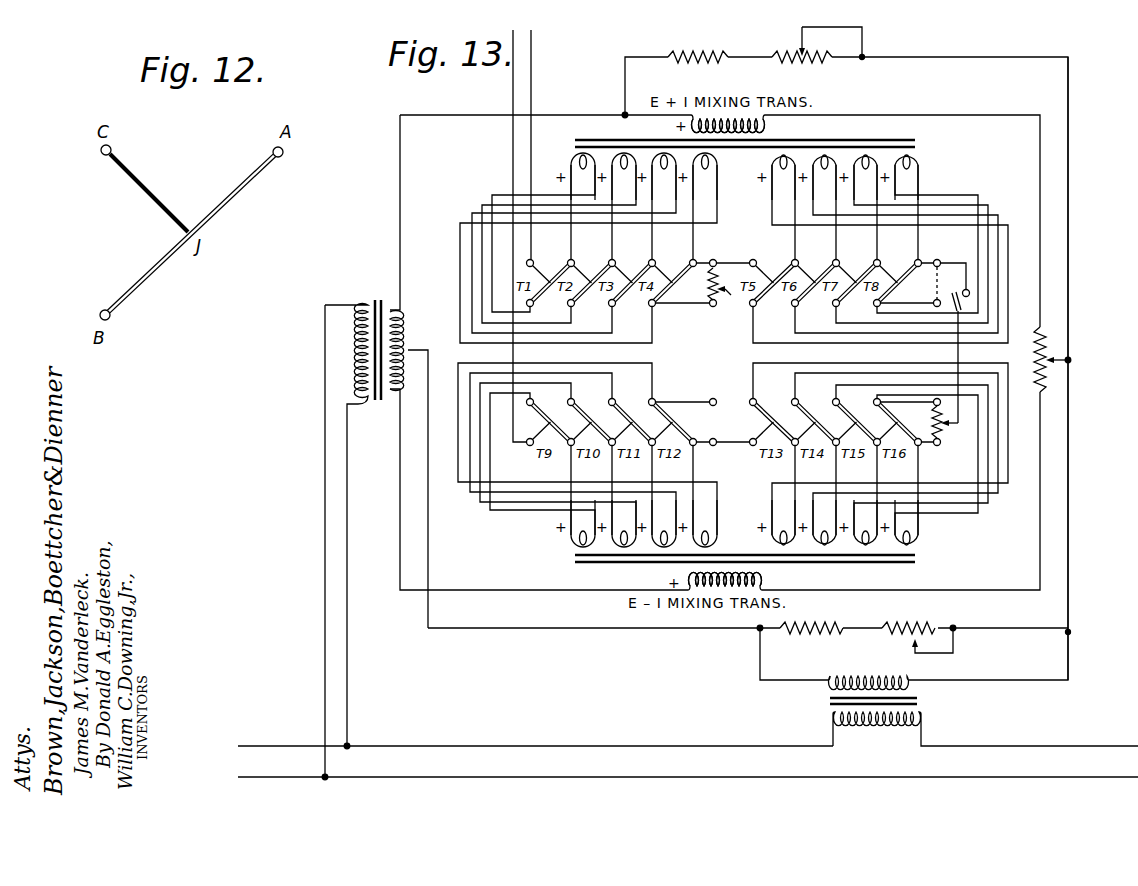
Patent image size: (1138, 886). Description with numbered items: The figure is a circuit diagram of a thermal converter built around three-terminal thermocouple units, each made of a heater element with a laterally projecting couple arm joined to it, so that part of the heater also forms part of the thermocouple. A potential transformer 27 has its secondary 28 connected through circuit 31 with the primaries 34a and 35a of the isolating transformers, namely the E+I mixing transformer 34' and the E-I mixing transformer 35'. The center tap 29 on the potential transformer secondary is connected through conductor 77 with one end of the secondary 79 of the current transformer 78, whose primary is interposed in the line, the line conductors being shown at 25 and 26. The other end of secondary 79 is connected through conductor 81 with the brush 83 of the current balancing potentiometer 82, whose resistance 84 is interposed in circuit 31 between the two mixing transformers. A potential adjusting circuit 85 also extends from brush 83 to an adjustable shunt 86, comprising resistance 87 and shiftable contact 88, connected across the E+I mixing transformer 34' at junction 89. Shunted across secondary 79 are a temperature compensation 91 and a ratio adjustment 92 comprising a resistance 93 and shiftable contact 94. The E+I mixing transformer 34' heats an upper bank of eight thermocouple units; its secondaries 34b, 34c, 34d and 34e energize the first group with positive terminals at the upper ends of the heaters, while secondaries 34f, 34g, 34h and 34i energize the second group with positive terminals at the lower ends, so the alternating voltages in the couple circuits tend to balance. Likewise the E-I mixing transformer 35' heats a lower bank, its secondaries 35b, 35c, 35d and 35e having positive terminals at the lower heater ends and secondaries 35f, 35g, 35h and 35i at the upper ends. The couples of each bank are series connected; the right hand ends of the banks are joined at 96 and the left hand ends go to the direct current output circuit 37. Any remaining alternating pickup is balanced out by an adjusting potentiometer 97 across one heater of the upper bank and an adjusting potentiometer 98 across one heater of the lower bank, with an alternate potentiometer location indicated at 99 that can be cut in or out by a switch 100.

The supply conductor 25 is at (533, 756).
The supply conductor 26 is at (688, 770).
The potential transformer 27 is at (378, 297).
The secondary 28 is at (412, 321).
The center tap 29 is at (410, 351).
The circuit 31 is at (1040, 185).
The E+I mixing transformer 34' is at (764, 129).
The primary 34a is at (742, 134).
The transformer secondary 34b is at (583, 176).
The transformer secondary 34c is at (624, 176).
The transformer secondary 34d is at (664, 176).
The transformer secondary 34e is at (705, 176).
The transformer secondary 34f is at (783, 177).
The transformer secondary 34g is at (824, 177).
The transformer secondary 34h is at (865, 177).
The transformer secondary 34i is at (906, 177).
The E-I mixing transformer 35' is at (767, 578).
The primary 35a is at (728, 571).
The secondary 35b is at (583, 523).
The secondary 35c is at (624, 523).
The secondary 35d is at (664, 523).
The secondary 35e is at (705, 523).
The secondary 35f is at (783, 522).
The secondary 35g is at (824, 522).
The secondary 35h is at (865, 522).
The secondary 35i is at (904, 524).
The D. C. output circuit 37 is at (522, 227).
The conductor 77 is at (485, 628).
The current transformer 78 is at (817, 704).
The secondary 79 is at (830, 673).
The conductor 81 is at (1002, 683).
The current balancing potentiometer 82 is at (1080, 343).
The brush 83 is at (1068, 362).
The resistance 84 is at (1043, 336).
The potential adjusting circuit 85 is at (1068, 248).
The adjustable shunt 86 is at (777, 36).
The resistance 87 is at (792, 58).
The shiftable contact 88 is at (806, 44).
The junction 89 is at (622, 114).
The temperature compensation 91 is at (806, 634).
The ratio adjustment 92 is at (893, 617).
The resistance 93 is at (918, 615).
The shiftable contact 94 is at (911, 644).
The connection 96 is at (958, 352).
The adjusting potentiometer 97 is at (731, 295).
The adjusting potentiometer 98 is at (940, 442).
The alternating current adjusting potentiometer 99 is at (938, 259).
The switch 100 is at (963, 299).